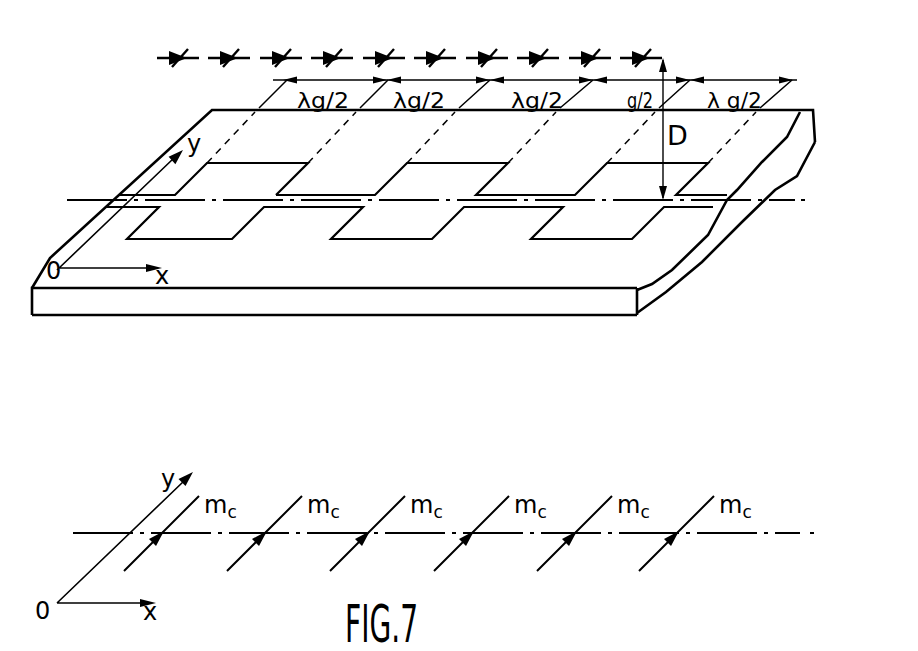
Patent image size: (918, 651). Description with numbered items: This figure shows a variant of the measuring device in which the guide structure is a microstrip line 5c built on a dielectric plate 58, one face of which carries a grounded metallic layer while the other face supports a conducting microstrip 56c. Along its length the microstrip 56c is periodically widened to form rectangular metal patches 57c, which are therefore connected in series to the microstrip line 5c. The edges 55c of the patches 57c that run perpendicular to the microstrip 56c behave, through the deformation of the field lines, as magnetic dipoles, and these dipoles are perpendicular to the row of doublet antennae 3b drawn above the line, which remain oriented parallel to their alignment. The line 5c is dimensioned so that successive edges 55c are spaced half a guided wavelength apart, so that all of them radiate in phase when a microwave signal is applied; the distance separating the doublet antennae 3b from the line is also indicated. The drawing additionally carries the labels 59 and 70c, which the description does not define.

The doublet antennae 3b is at (558, 25).
The microstrip line 5c is at (149, 152).
The edges 55c is at (247, 228).
The conducting microstrip 56c is at (137, 188).
The rectangular metal patches 57c is at (218, 178).
The dielectric plate 58 is at (94, 297).
The ground plane 59 is at (150, 318).
The broken-away end portion 70c is at (763, 202).